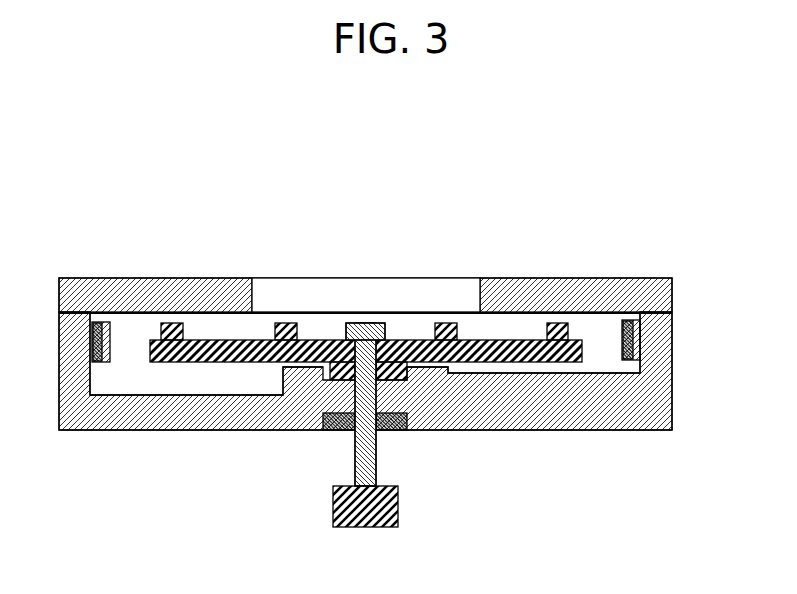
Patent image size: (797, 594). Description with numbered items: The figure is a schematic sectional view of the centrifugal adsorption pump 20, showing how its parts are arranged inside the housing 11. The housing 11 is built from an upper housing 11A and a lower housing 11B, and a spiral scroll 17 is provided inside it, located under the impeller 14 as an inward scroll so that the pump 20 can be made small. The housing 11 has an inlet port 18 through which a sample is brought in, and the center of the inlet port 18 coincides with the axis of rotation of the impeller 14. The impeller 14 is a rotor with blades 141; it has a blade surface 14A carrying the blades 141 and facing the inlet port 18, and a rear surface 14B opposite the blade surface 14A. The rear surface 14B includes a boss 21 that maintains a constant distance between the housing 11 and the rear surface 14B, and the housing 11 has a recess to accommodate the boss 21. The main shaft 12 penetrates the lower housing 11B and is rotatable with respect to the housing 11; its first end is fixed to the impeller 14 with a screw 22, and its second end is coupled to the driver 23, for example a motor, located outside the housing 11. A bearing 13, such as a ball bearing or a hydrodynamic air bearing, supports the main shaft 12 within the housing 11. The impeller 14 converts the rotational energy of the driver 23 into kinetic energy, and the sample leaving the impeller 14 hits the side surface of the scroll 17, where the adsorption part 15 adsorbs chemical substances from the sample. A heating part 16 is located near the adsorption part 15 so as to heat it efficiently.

The adsorption pump 20 is at (582, 134).
The housing 11 is at (375, 296).
The upper housing 11A is at (613, 290).
The lower housing 11B is at (588, 384).
The main shaft 12 is at (377, 458).
The bearing 13 is at (394, 430).
The impeller 14 is at (366, 262).
The blade surface 14A is at (240, 340).
The rear surface 14B is at (260, 352).
The blades 141 is at (178, 212).
The adsorption part 15 is at (660, 312).
The heating part 16 is at (640, 350).
The scroll 17 is at (170, 383).
The inlet port 18 is at (367, 292).
The boss 21 is at (335, 378).
The screw 22 is at (380, 323).
The driver 23 is at (333, 508).